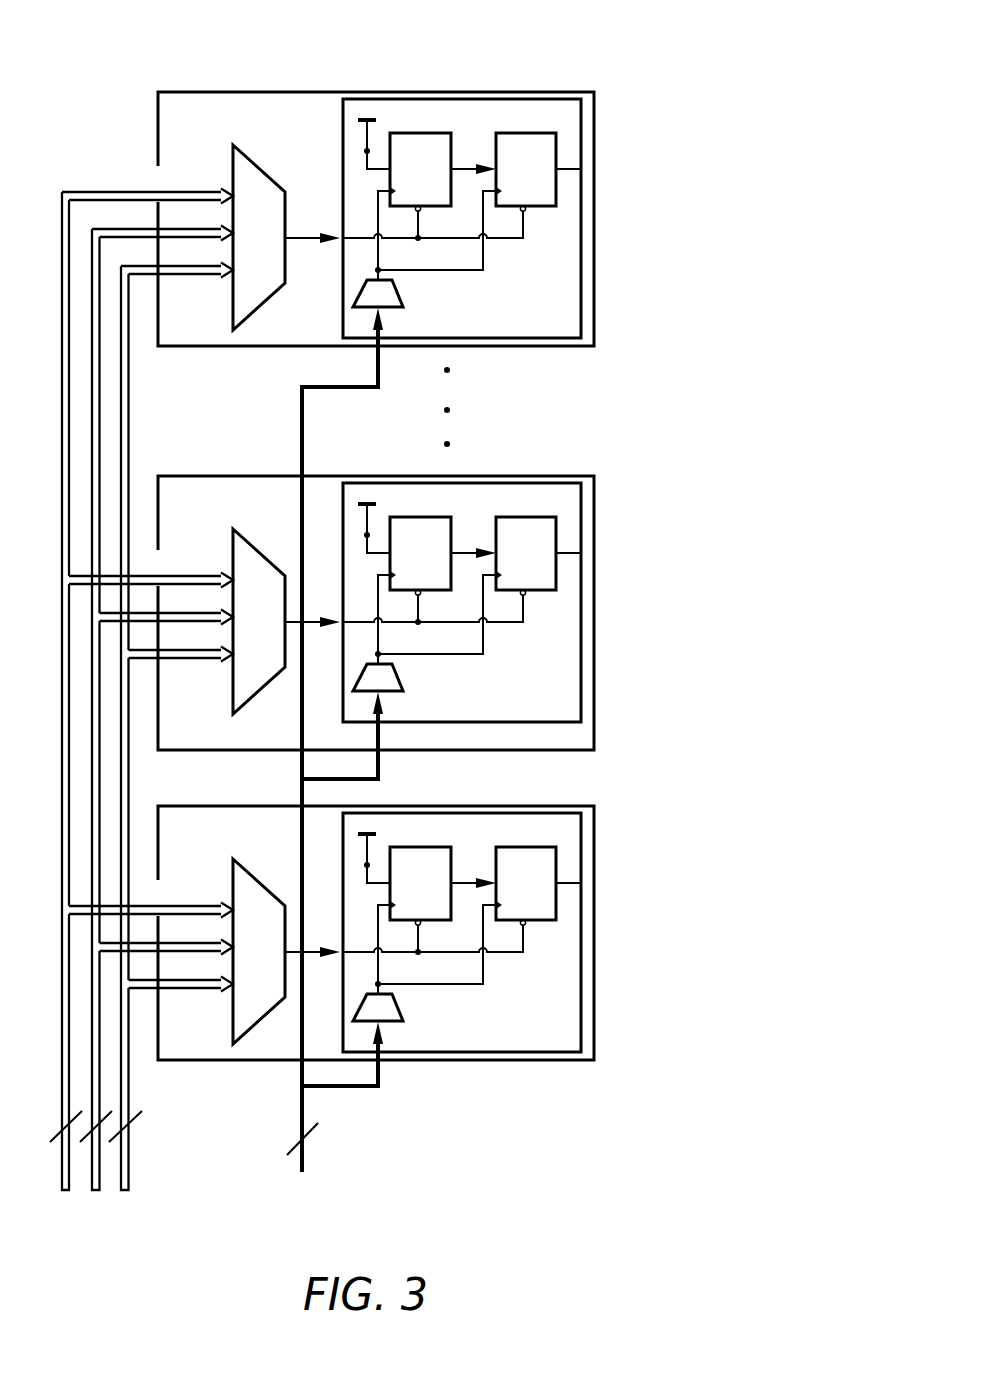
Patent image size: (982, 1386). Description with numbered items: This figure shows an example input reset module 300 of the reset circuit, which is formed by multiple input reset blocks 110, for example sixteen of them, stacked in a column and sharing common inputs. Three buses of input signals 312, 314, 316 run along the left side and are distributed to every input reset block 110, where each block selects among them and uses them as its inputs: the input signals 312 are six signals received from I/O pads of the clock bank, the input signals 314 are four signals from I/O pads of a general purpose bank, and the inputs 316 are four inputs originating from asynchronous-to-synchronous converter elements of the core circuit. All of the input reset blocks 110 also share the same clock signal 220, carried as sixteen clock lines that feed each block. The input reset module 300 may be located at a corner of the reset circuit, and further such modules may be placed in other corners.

The input reset module 300 is at (603, 58).
The input reset block 110 is at (594, 217).
The clock signal 220 is at (299, 1124).
The input signals 312 is at (66, 1192).
The input signals 314 is at (95, 1192).
The inputs 316 is at (126, 1192).